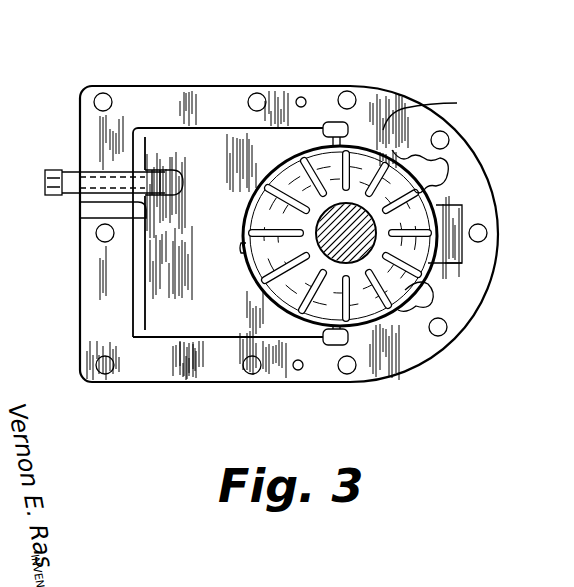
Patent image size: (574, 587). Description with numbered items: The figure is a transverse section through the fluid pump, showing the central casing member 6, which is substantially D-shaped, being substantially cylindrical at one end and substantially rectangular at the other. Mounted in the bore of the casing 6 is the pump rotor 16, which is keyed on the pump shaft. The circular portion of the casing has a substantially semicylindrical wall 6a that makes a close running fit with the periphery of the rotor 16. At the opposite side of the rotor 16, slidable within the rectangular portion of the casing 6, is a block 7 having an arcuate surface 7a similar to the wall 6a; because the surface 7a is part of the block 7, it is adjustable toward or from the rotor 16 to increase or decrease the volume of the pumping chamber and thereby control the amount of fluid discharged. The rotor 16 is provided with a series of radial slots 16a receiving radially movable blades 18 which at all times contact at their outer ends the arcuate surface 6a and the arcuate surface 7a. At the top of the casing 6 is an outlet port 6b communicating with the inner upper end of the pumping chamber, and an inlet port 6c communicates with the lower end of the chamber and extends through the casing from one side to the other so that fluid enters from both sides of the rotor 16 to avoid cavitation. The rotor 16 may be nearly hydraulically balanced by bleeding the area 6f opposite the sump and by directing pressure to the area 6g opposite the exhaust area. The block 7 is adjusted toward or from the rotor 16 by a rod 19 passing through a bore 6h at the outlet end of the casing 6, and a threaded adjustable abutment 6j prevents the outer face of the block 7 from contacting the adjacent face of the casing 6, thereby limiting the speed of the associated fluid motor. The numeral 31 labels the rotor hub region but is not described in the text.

The central casing member 6 is at (437, 343).
The semicylindrical wall 6a is at (462, 205).
The outlet port 6b is at (328, 122).
The inlet port 6c is at (373, 383).
The bleed area 6f is at (432, 162).
The pressure area 6g is at (408, 302).
The bore 6h is at (97, 168).
The threaded adjustable abutment 6j is at (132, 245).
The block 7 is at (178, 328).
The arcuate surface 7a is at (242, 249).
The pump rotor 16 is at (488, 224).
The radial slots 16a is at (462, 263).
The blades 18 is at (457, 103).
The rod 19 is at (62, 169).
The rotor hub 31 is at (370, 227).